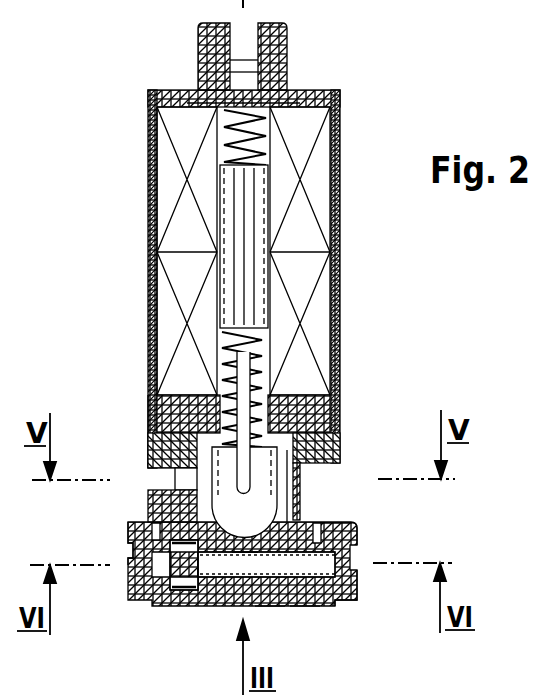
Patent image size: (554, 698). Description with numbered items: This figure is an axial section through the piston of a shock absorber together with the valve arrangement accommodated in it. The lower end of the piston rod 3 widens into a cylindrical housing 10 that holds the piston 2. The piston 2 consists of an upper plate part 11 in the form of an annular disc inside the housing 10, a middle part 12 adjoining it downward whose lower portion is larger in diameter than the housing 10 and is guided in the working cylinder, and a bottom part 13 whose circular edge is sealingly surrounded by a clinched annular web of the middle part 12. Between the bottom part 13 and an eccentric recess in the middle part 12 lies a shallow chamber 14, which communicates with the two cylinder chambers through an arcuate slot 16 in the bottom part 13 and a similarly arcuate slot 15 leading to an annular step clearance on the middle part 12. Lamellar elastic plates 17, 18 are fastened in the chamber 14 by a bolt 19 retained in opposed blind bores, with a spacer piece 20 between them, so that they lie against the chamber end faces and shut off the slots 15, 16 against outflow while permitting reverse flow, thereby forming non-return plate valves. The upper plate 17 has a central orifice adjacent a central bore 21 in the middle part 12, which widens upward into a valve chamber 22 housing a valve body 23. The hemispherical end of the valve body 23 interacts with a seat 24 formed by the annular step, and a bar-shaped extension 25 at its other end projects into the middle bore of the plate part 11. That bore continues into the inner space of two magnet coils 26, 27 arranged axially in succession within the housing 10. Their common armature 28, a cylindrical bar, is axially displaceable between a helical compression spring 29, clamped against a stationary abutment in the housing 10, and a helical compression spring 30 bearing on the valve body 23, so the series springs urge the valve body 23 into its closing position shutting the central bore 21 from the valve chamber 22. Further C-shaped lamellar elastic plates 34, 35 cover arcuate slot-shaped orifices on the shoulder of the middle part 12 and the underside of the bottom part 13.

The piston 2 is at (122, 582).
The piston rod 3 is at (287, 52).
The cylindrical housing 10 is at (148, 140).
The plate part 11 is at (313, 413).
The middle part 12 is at (315, 447).
The bottom part 13 is at (268, 605).
The shallow chamber 14 is at (210, 580).
The arcuate slot 15 is at (350, 515).
The arcuate slot 16 is at (330, 612).
The lamellar elastic plate 17 is at (345, 553).
The lamellar elastic plate 18 is at (347, 568).
The bolt 19 is at (183, 575).
The spacer piece 20 is at (130, 548).
The central bore 21 is at (245, 562).
The valve chamber 22 is at (150, 415).
The valve body 23 is at (257, 500).
The seat 24 is at (150, 507).
The bar-shaped extension 25 is at (218, 362).
The magnet coil 26 is at (338, 180).
The magnet coil 27 is at (311, 306).
The armature 28 is at (240, 222).
The helical compression spring 29 is at (270, 124).
The helical compression spring 30 is at (257, 368).
The lamellar elastic plate 34 is at (150, 478).
The lamellar elastic plate 35 is at (293, 612).